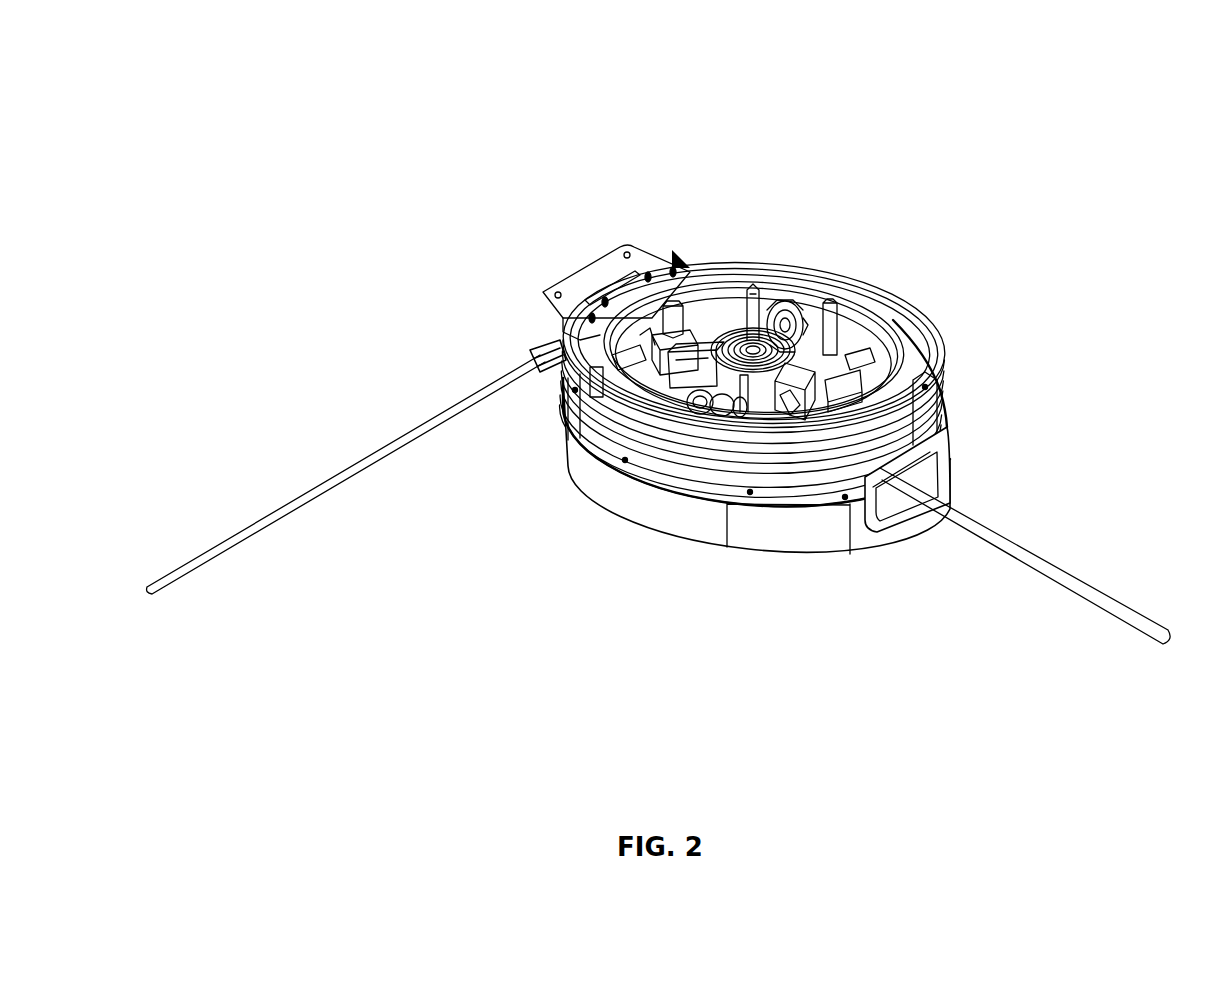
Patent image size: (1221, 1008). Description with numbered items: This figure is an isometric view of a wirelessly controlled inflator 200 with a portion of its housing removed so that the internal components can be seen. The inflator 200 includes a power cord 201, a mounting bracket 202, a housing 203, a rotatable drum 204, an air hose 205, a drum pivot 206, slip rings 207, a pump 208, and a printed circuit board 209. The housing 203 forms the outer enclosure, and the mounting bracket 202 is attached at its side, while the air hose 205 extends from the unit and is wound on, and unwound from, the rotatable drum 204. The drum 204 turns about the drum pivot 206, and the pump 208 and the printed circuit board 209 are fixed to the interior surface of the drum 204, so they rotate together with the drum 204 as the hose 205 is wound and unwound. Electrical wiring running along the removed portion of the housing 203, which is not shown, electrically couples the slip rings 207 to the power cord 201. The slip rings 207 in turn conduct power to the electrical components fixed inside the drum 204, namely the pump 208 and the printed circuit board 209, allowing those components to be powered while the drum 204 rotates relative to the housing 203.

The inflator 200 is at (200, 121).
The power cord 201 is at (276, 514).
The mounting bracket 202 is at (581, 272).
The housing 203 is at (678, 515).
The rotatable drum 204 is at (728, 318).
The air hose 205 is at (720, 268).
The drum pivot 206 is at (752, 342).
The slip rings 207 is at (790, 310).
The pump 208 is at (647, 363).
The printed circuit board 209 is at (780, 410).